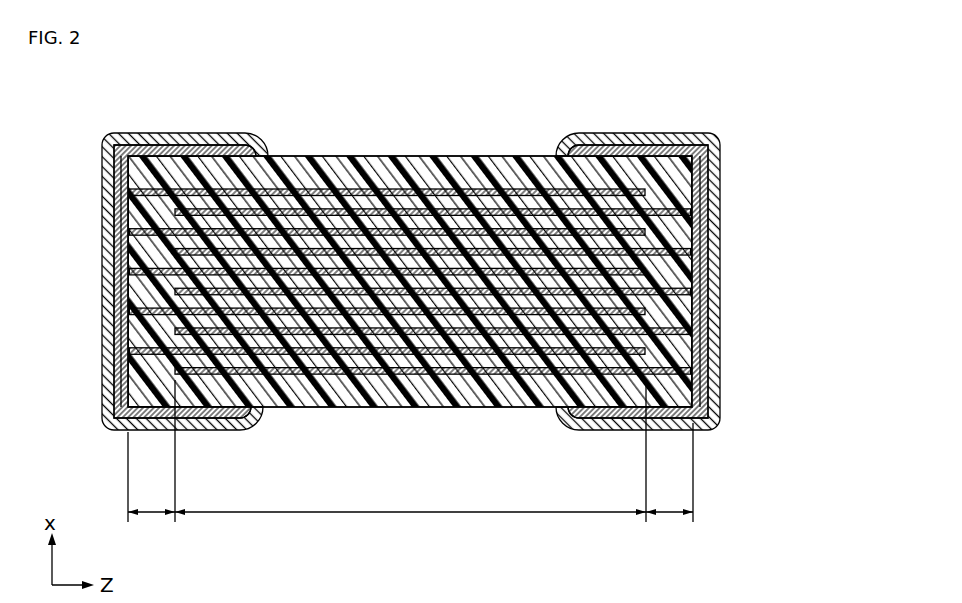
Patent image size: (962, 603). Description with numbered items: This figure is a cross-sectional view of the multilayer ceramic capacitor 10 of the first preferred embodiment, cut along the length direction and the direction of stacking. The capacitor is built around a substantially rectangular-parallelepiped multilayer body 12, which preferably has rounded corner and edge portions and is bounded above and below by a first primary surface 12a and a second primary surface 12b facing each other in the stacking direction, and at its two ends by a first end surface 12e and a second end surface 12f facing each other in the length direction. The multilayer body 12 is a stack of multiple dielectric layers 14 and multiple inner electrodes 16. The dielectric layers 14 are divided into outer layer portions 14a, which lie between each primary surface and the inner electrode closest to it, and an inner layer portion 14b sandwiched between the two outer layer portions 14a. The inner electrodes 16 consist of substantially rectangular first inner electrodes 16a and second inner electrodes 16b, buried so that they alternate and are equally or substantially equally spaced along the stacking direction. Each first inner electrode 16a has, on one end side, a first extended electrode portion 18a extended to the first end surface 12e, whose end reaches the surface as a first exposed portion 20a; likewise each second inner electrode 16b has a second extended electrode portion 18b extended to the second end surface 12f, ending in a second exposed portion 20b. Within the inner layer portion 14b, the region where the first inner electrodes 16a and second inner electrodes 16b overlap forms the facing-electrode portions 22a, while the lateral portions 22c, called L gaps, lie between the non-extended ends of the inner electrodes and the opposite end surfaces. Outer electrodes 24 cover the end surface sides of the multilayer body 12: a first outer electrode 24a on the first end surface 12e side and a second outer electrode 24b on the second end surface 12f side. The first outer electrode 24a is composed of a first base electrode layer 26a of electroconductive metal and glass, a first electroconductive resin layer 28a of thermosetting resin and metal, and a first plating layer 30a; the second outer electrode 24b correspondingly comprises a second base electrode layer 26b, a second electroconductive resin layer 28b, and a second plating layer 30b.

The multilayer ceramic capacitor 10 is at (65, 134).
The multilayer body 12 is at (366, 147).
The first primary surface 12a is at (340, 156).
The second primary surface 12b is at (333, 407).
The first end surface 12e is at (130, 257).
The second end surface 12f is at (693, 250).
The dielectric layers 14 is at (557, 98).
The outer layer portions 14a is at (463, 176).
The inner layer portion 14b is at (532, 243).
The inner electrodes 16 is at (505, 545).
The first inner electrodes 16a is at (305, 271).
The second inner electrodes 16b is at (475, 291).
The first extended electrode portion 18a is at (124, 191).
The second extended electrode portion 18b is at (700, 193).
The first exposed portion 20a is at (120, 187).
The second exposed portion 20b is at (703, 214).
The facing-electrode portions 22a is at (410, 451).
The lateral portions (L gaps) 22c is at (410, 472).
The outer electrodes 24 is at (380, 545).
The first outer electrode 24a is at (151, 241).
The second outer electrode 24b is at (671, 246).
The first base electrode layer 26a is at (101, 244).
The second base electrode layer 26b is at (730, 244).
The first electroconductive resin layer 28a is at (165, 150).
The second electroconductive resin layer 28b is at (668, 150).
The first plating layer 30a is at (221, 140).
The second plating layer 30b is at (618, 140).